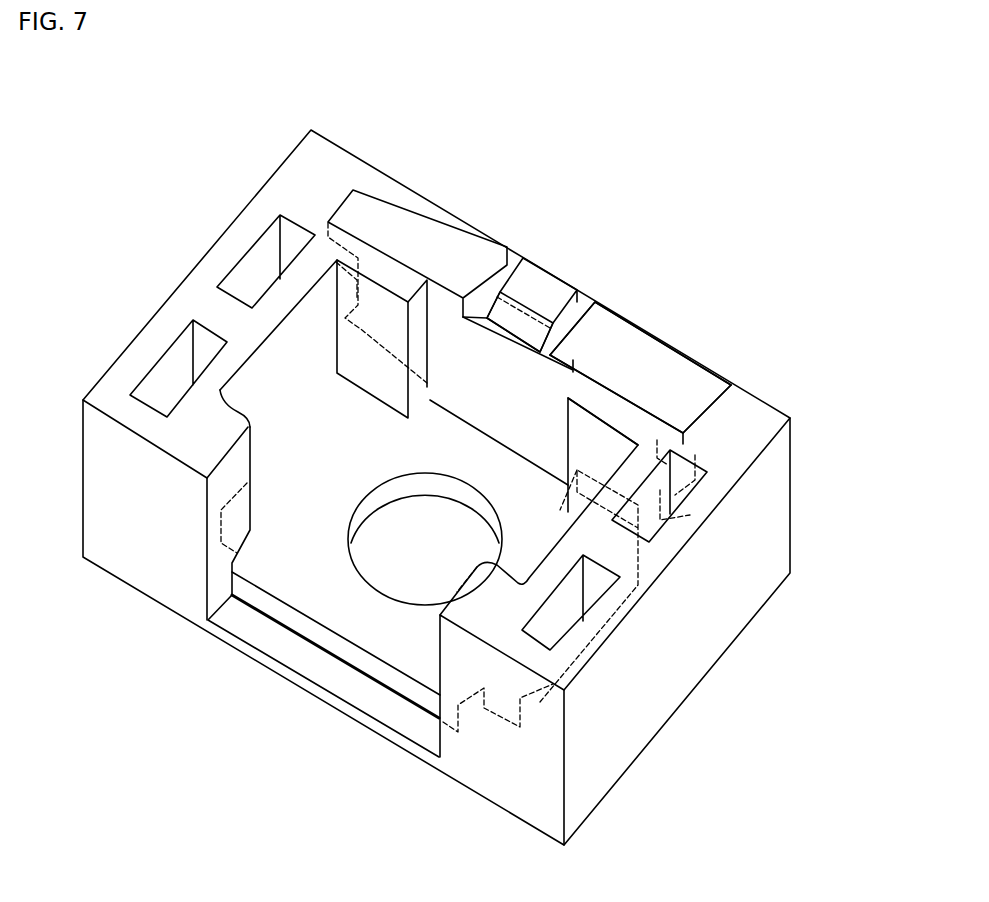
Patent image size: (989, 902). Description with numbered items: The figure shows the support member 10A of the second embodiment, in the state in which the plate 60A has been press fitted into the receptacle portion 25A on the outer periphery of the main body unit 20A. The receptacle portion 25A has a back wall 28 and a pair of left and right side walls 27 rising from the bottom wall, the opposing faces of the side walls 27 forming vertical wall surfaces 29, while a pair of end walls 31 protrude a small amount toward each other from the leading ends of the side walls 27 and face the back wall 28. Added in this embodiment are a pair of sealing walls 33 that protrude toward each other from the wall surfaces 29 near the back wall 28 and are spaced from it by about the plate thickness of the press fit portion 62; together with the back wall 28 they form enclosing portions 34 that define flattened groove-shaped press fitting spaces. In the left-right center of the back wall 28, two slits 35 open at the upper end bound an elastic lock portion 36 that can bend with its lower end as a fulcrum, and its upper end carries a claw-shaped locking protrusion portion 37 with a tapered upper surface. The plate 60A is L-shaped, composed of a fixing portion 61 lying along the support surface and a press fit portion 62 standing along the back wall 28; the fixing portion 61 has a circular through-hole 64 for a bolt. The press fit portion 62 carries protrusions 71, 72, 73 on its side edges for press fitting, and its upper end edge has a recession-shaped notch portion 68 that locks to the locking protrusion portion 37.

The support member 10A is at (594, 135).
The main body unit 20A is at (790, 540).
The receptacle portion 25A is at (318, 151).
The side walls 27 is at (178, 290).
The back wall 28 is at (443, 224).
The wall surfaces 29 is at (245, 410).
The end walls 31 is at (197, 598).
The sealing walls 33 is at (385, 260).
The enclosing portions 34 is at (418, 224).
The slits 35 is at (505, 264).
The elastic lock portion 36 is at (557, 273).
The locking protrusion portion 37 is at (527, 328).
The plate 60A is at (270, 613).
The fixing portion 61 is at (367, 663).
The press fit portion 62 is at (590, 353).
The through-hole 64 is at (383, 577).
The notch portion 68 is at (481, 317).
The protrusion 71 is at (360, 312).
The protrusion 72 is at (340, 265).
The protrusion 73 is at (347, 210).